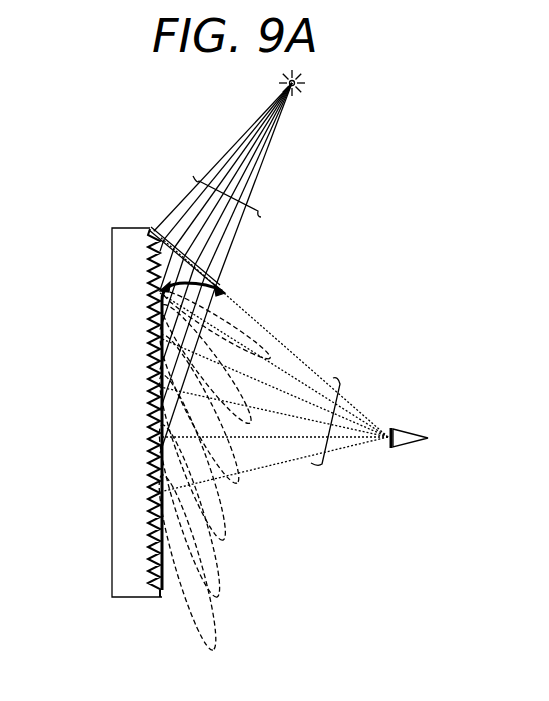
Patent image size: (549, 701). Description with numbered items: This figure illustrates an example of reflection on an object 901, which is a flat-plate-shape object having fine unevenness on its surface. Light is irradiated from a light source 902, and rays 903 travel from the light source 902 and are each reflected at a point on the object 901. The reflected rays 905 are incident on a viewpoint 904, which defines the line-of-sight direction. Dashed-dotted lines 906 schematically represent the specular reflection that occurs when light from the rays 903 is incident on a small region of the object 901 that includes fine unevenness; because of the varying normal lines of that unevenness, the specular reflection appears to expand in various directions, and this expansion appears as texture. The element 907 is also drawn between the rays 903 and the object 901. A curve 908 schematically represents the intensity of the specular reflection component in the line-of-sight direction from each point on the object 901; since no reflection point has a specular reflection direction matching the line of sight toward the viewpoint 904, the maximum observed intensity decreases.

The object 901 is at (112, 597).
The light source 902 is at (302, 95).
The rays 903 is at (258, 212).
The viewpoint 904 is at (408, 448).
The reflected rays 905 is at (345, 382).
The dashed-dotted lines 906 is at (214, 646).
The cylindrical lens 907 is at (220, 283).
The curve 908 is at (163, 595).